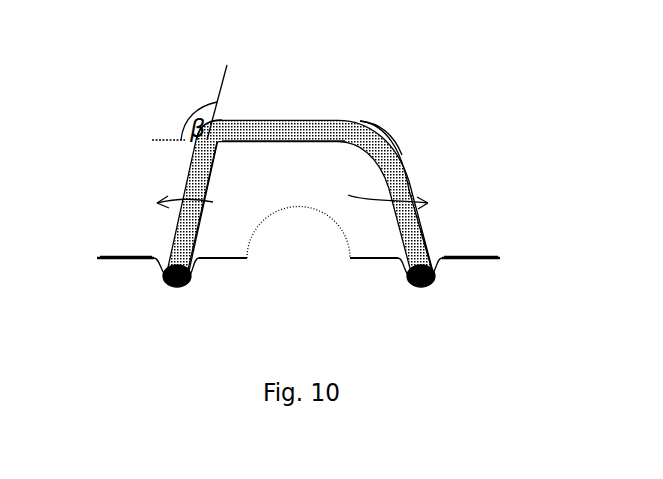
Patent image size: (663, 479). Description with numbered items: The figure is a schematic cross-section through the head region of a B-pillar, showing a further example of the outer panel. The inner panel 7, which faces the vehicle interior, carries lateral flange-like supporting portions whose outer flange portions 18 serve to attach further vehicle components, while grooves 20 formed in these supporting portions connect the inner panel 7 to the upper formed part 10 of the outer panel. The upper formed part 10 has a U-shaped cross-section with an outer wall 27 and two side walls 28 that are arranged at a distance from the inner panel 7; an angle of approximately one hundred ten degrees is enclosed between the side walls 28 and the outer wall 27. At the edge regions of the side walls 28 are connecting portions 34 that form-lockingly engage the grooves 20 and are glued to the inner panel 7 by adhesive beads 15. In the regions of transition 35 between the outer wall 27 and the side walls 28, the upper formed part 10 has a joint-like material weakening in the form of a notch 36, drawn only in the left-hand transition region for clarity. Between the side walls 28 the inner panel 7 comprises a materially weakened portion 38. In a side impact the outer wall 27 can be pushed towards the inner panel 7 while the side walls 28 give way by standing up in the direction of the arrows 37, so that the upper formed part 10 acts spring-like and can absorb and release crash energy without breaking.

The inner panel 7 is at (490, 260).
The upper formed part 10 is at (337, 121).
The adhesive beads 15 is at (409, 290).
The outer flange portions 18 is at (122, 257).
The grooves 20 is at (180, 288).
The outer wall 27 is at (303, 120).
The side walls 28 is at (409, 185).
The connecting portions 34 is at (424, 250).
The regions of transition 35 is at (232, 125).
The notch 36 is at (232, 142).
The arrows 37 is at (188, 197).
The materially weakened portion 38 is at (297, 207).